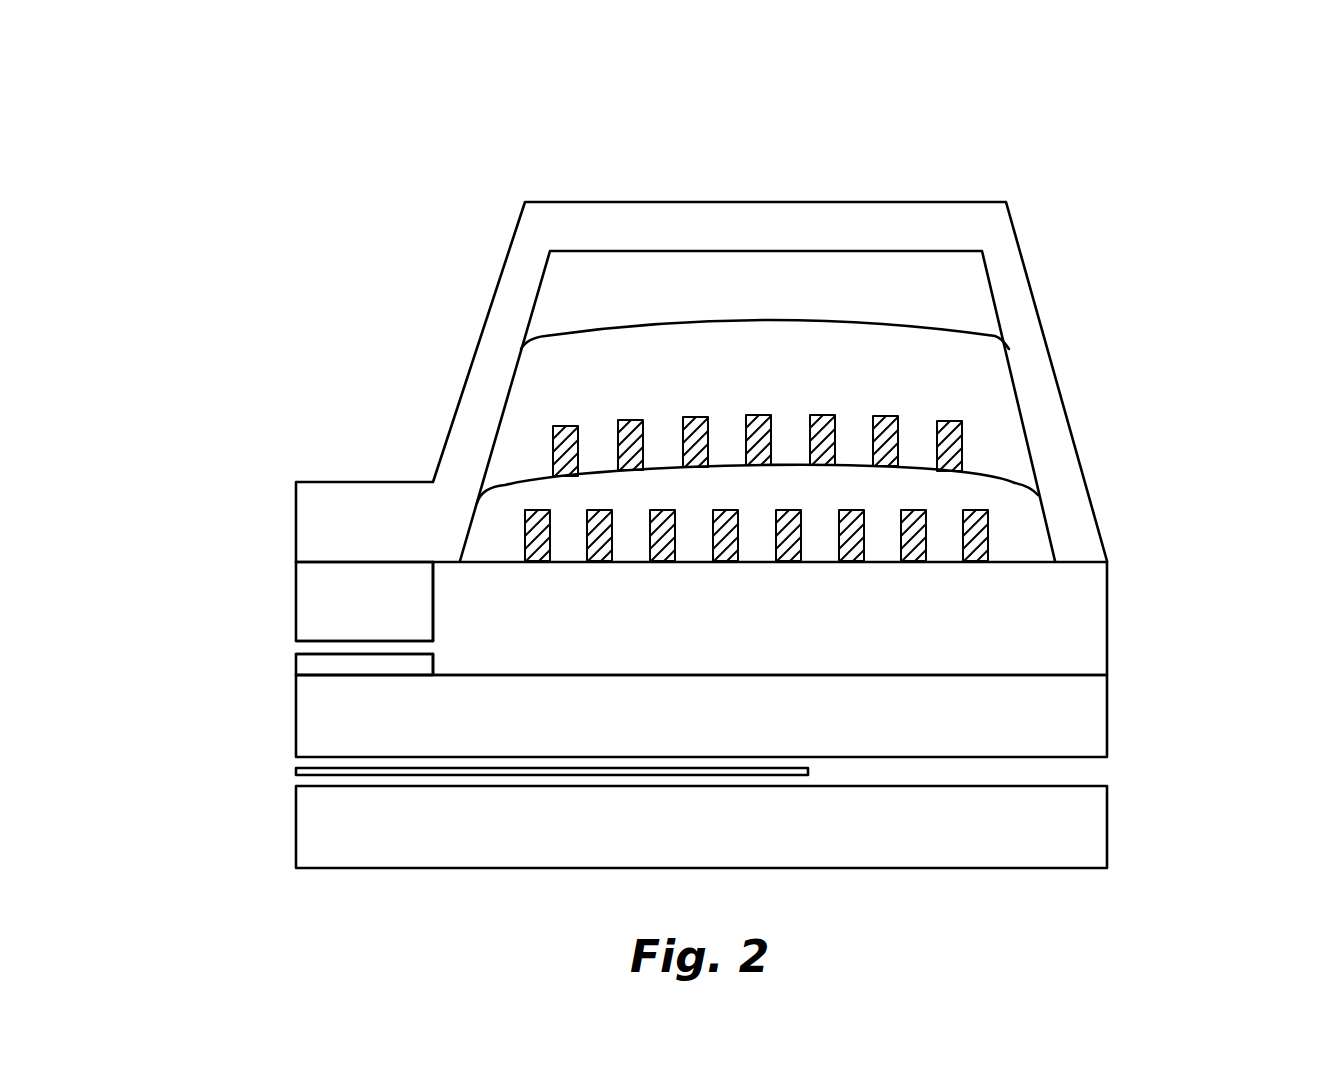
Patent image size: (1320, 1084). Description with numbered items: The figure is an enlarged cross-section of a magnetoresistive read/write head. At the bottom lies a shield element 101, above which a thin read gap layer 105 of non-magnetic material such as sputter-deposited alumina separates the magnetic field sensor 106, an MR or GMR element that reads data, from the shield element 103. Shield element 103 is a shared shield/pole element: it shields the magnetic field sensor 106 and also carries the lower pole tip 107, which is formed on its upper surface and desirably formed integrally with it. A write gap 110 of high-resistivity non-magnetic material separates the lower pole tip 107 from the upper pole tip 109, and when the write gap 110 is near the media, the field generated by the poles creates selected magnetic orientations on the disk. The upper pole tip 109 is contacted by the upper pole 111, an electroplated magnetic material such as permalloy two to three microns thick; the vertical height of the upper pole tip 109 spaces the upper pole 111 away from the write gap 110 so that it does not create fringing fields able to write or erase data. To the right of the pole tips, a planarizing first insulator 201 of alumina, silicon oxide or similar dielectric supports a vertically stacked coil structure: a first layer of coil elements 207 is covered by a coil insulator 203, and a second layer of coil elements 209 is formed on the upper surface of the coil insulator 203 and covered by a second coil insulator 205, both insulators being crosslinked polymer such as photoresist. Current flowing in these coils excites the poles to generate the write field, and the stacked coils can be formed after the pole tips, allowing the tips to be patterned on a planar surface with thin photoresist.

The shield element 101 is at (1053, 833).
The shield element 103 is at (1055, 725).
The read gap layer 105 is at (1090, 770).
The magnetic field sensor 106 is at (300, 770).
The lower pole tip 107 is at (307, 663).
The upper pole tip 109 is at (317, 597).
The write gap 110 is at (300, 648).
The upper pole 111 is at (768, 201).
The first insulator 201 is at (843, 632).
The coil insulator 203 is at (997, 503).
The second coil insulator 205 is at (825, 369).
The coil elements 207 is at (597, 521).
The coil elements 209 is at (628, 419).